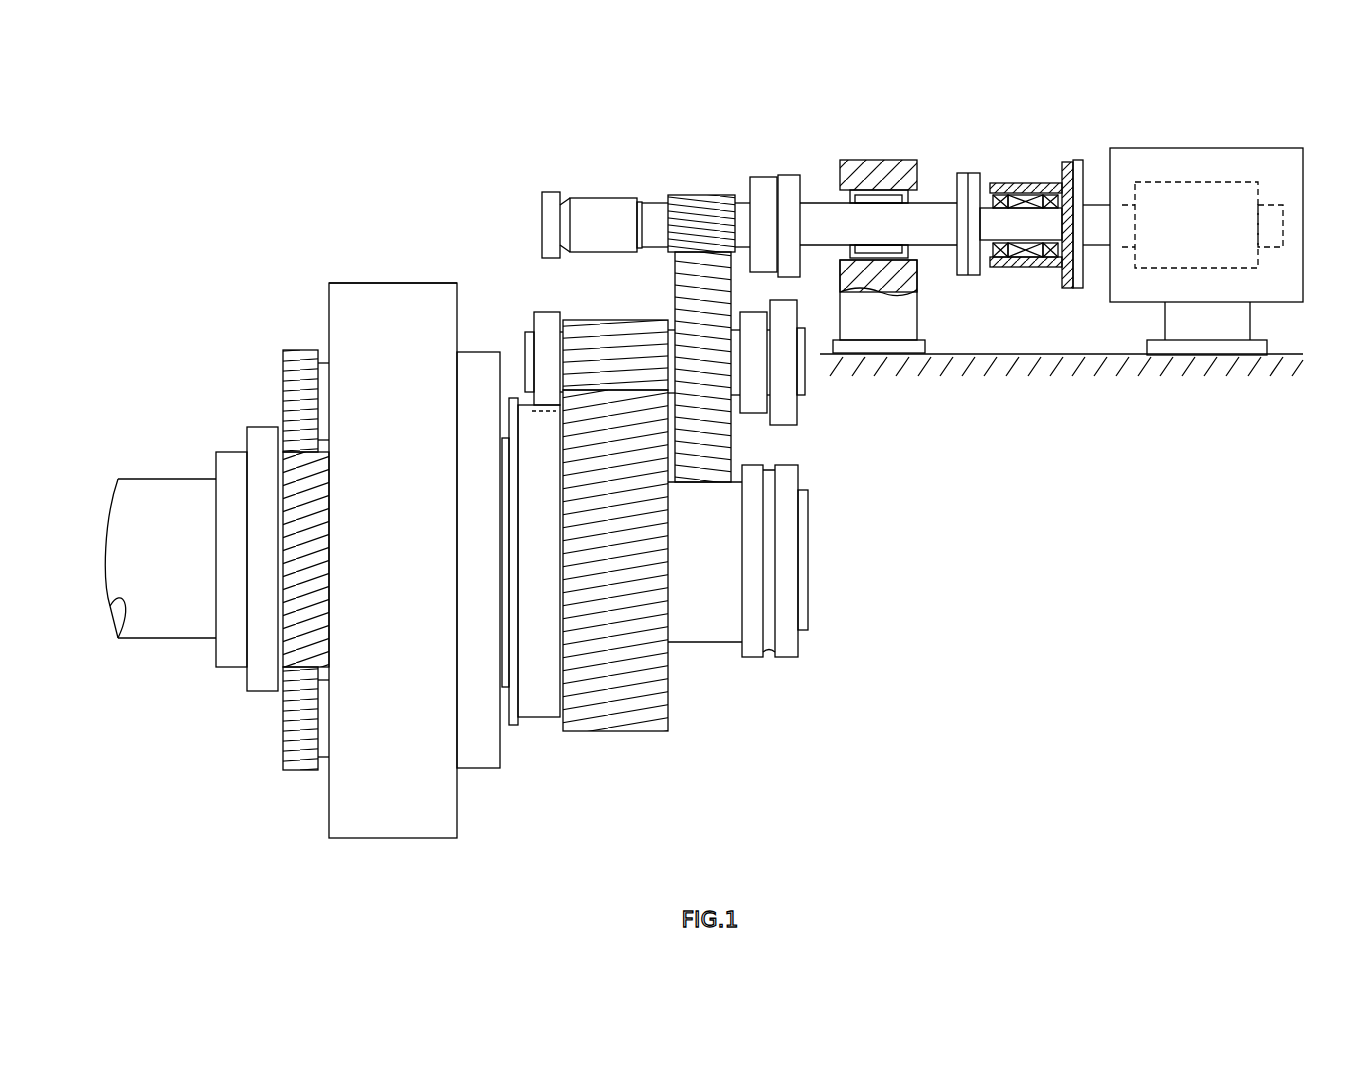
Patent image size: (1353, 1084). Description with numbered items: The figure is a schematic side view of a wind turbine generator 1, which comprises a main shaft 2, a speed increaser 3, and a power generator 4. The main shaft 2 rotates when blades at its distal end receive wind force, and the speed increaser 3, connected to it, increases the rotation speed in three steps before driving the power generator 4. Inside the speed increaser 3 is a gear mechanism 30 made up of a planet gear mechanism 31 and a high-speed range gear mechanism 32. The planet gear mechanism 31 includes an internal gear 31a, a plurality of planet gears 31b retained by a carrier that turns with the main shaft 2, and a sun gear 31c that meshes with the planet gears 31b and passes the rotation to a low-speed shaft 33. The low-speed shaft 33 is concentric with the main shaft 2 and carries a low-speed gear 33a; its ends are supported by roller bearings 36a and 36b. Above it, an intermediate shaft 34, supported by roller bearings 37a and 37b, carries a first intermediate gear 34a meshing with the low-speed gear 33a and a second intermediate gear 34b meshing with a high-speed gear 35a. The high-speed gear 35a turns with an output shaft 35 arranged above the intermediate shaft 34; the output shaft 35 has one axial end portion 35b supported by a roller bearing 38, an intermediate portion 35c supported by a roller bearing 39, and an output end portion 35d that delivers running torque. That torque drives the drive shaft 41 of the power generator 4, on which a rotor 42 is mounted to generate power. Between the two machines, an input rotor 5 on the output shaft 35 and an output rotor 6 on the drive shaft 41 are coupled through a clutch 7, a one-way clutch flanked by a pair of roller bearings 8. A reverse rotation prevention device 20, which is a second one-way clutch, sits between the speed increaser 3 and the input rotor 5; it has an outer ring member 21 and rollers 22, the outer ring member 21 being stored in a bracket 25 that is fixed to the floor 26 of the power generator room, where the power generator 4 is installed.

The wind turbine generator 1 is at (1070, 131).
The main shaft 2 is at (145, 490).
The speed increaser 3 is at (388, 236).
The power generator 4 is at (1178, 148).
The input rotor 5 is at (1010, 215).
The output rotor 6 is at (1030, 190).
The clutch 7 is at (1025, 268).
The roller bearings 8 is at (995, 268).
The reverse rotation prevention device 20 is at (932, 266).
The outer ring member 21 is at (858, 166).
The rollers 22 is at (876, 196).
The bracket 25 is at (893, 199).
The floor 26 is at (1075, 354).
The gear mechanism 30 is at (329, 283).
The planet gear mechanism 31 is at (420, 283).
The internal gear 31a is at (360, 292).
The planet gears 31b is at (283, 369).
The sun gear 31c is at (285, 484).
The high-speed range gear mechanism 32 is at (692, 160).
The low-speed shaft 33 is at (705, 643).
The low-speed gear 33a is at (617, 732).
The intermediate shaft 34 is at (525, 332).
The first intermediate gear 34a is at (587, 320).
The second intermediate gear 34b is at (675, 288).
The output shaft 35 is at (608, 196).
The high-speed gear 35a is at (705, 195).
The one axial end portion 35b is at (583, 198).
The intermediate portion 35c is at (812, 200).
The output end portion 35d is at (945, 200).
The roller bearing 36a is at (540, 718).
The roller bearing 36b is at (752, 657).
The roller bearing 37a is at (550, 312).
The roller bearing 37b is at (765, 395).
The roller bearing 38 is at (548, 192).
The roller bearing 39 is at (762, 177).
The drive shaft 41 is at (1095, 200).
The rotor 42 is at (1230, 185).